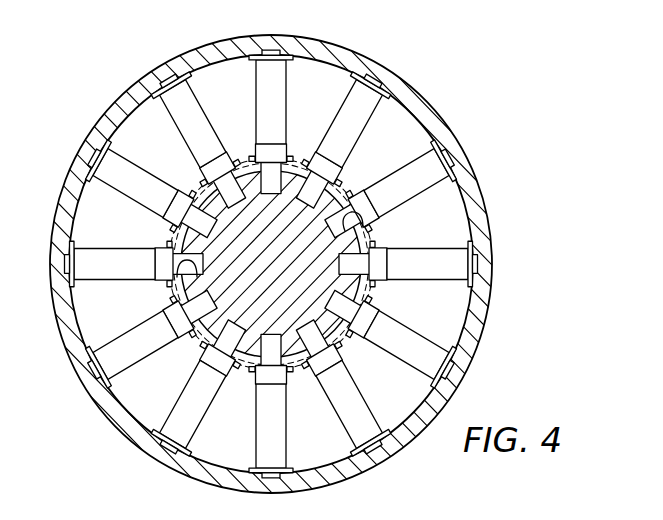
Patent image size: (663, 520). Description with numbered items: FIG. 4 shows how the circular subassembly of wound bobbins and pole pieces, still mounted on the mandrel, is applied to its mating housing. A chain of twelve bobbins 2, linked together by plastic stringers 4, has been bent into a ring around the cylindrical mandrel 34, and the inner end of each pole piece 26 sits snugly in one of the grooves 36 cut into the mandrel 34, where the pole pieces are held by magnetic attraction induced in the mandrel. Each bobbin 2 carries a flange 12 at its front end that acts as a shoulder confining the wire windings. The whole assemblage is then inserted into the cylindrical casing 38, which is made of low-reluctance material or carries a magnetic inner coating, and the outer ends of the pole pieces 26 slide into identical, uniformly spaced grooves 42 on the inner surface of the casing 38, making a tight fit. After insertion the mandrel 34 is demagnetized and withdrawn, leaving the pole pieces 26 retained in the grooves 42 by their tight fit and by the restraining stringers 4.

The bobbin 2 is at (425, 329).
The stringer 4 is at (295, 146).
The flange 12 is at (190, 446).
The pole piece 26 is at (186, 311).
The mandrel 34 is at (292, 276).
The groove 36 is at (380, 224).
The casing 38 is at (487, 200).
The groove 42 is at (372, 92).